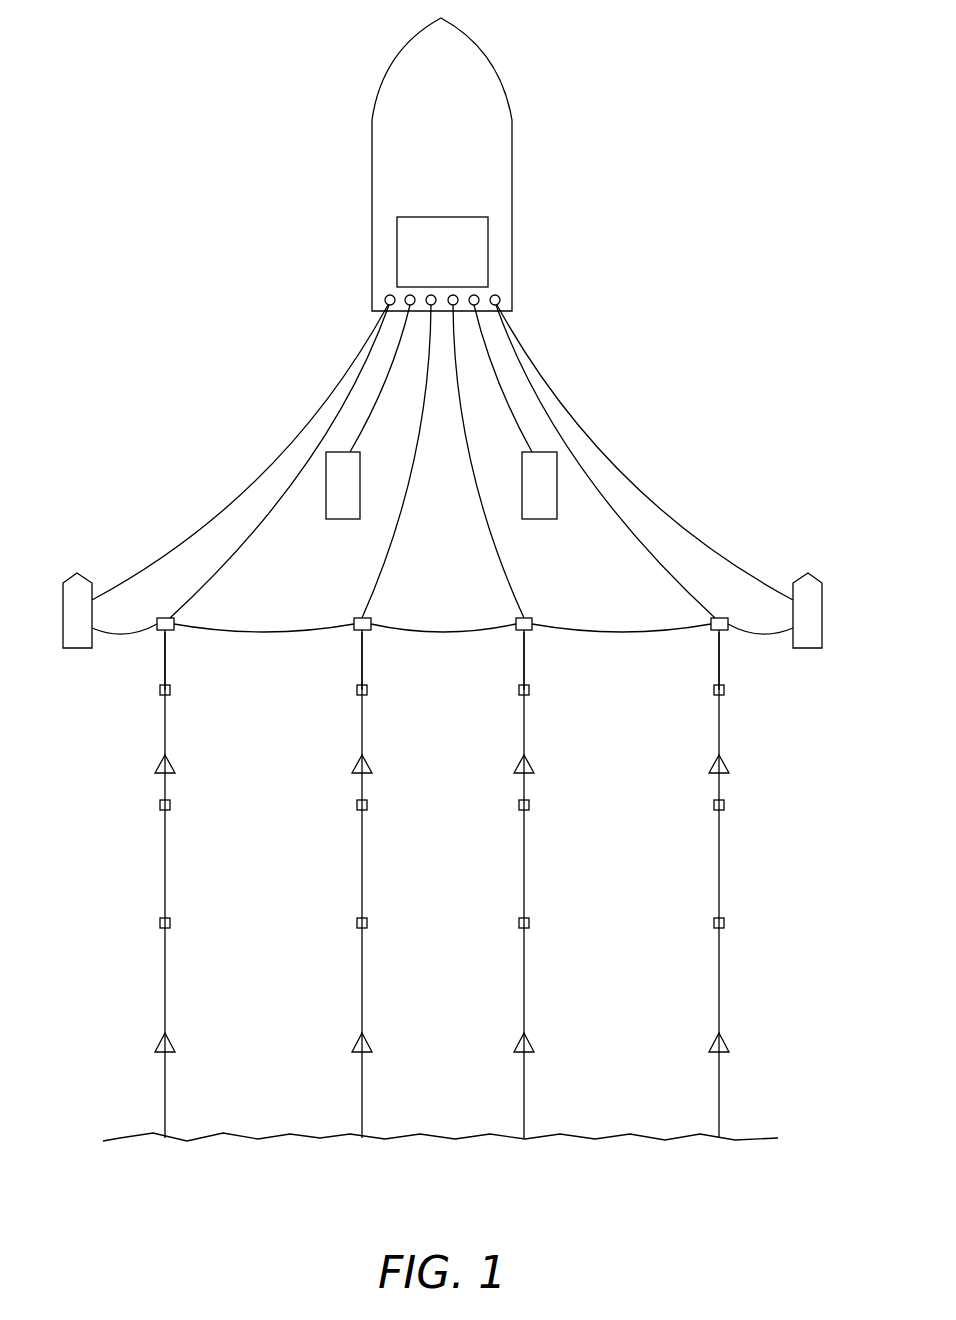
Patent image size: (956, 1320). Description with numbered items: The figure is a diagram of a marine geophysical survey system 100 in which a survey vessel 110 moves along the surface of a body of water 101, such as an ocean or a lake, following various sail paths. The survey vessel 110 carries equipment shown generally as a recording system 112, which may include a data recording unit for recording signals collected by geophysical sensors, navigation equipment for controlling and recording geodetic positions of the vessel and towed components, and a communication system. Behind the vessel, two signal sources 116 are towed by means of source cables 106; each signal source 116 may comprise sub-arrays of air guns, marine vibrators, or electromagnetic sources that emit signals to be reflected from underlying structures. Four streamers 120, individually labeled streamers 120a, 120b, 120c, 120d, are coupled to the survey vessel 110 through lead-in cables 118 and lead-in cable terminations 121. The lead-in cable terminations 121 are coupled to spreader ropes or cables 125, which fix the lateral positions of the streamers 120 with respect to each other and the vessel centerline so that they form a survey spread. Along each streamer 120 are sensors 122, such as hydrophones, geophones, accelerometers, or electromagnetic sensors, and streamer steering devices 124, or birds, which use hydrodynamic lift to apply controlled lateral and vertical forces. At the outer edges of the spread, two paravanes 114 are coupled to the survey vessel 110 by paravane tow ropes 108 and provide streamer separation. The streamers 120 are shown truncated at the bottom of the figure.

The marine geophysical survey system 100 is at (222, 135).
The body of water 101 is at (628, 118).
The source cables 106 is at (400, 347).
The paravane tow ropes 108 is at (268, 472).
The survey vessel 110 is at (461, 143).
The recording system 112 is at (440, 217).
The paravanes 114 is at (77, 653).
The signal sources 116 is at (338, 520).
The lead-in cables 118 is at (230, 563).
The streamers 120 is at (165, 730).
The streamer 120a is at (166, 665).
The streamer 120b is at (363, 660).
The streamer 120c is at (525, 660).
The streamer 120d is at (717, 657).
The lead-in cable terminations 121 is at (527, 617).
The sensors 122 is at (372, 690).
The streamer steering devices 124 is at (372, 768).
The spreader ropes or cables 125 is at (290, 638).